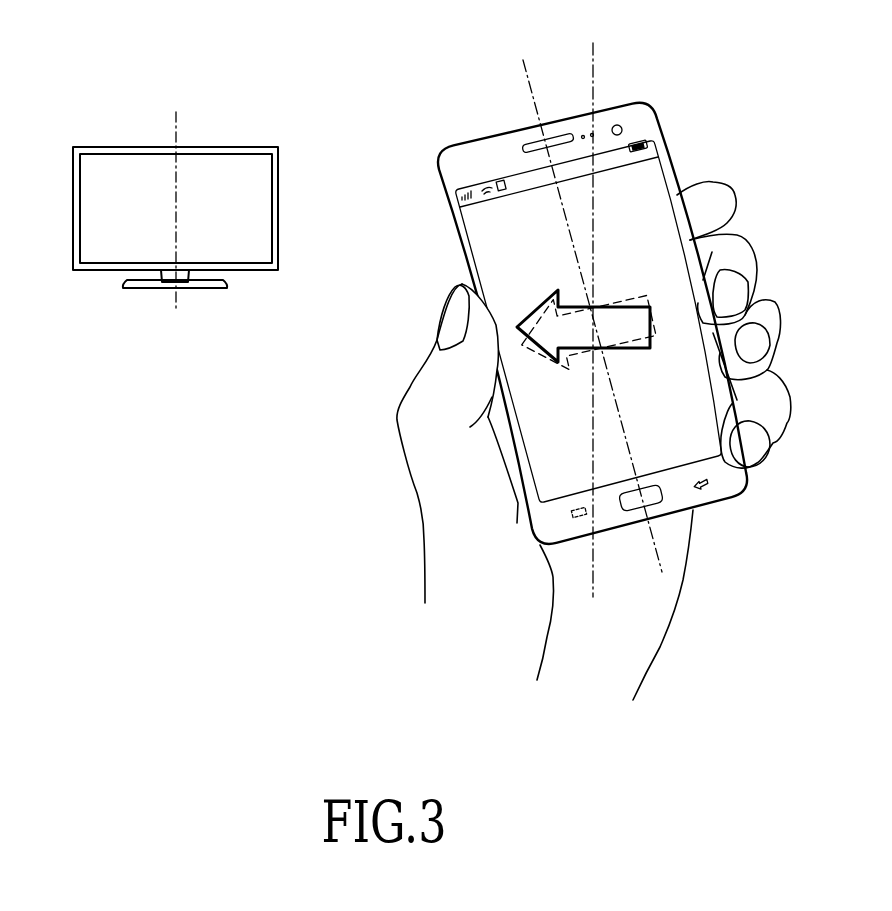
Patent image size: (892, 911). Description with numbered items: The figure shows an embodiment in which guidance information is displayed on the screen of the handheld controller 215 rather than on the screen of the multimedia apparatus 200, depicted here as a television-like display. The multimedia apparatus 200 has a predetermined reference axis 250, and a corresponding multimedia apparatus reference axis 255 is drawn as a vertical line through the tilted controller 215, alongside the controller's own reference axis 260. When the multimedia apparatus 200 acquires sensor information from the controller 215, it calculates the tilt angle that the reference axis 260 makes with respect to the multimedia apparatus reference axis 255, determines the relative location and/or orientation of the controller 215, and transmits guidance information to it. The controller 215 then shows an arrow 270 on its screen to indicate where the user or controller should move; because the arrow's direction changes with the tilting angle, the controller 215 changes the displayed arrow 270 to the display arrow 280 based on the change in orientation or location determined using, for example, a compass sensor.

The multimedia apparatus 200 is at (279, 207).
The predetermined reference axis 250 is at (177, 127).
The multimedia apparatus reference axis 255 is at (593, 62).
The reference axis of the controller 260 is at (528, 88).
The controller 215 is at (657, 115).
The arrow 270 is at (617, 298).
The display arrow 280 is at (633, 350).